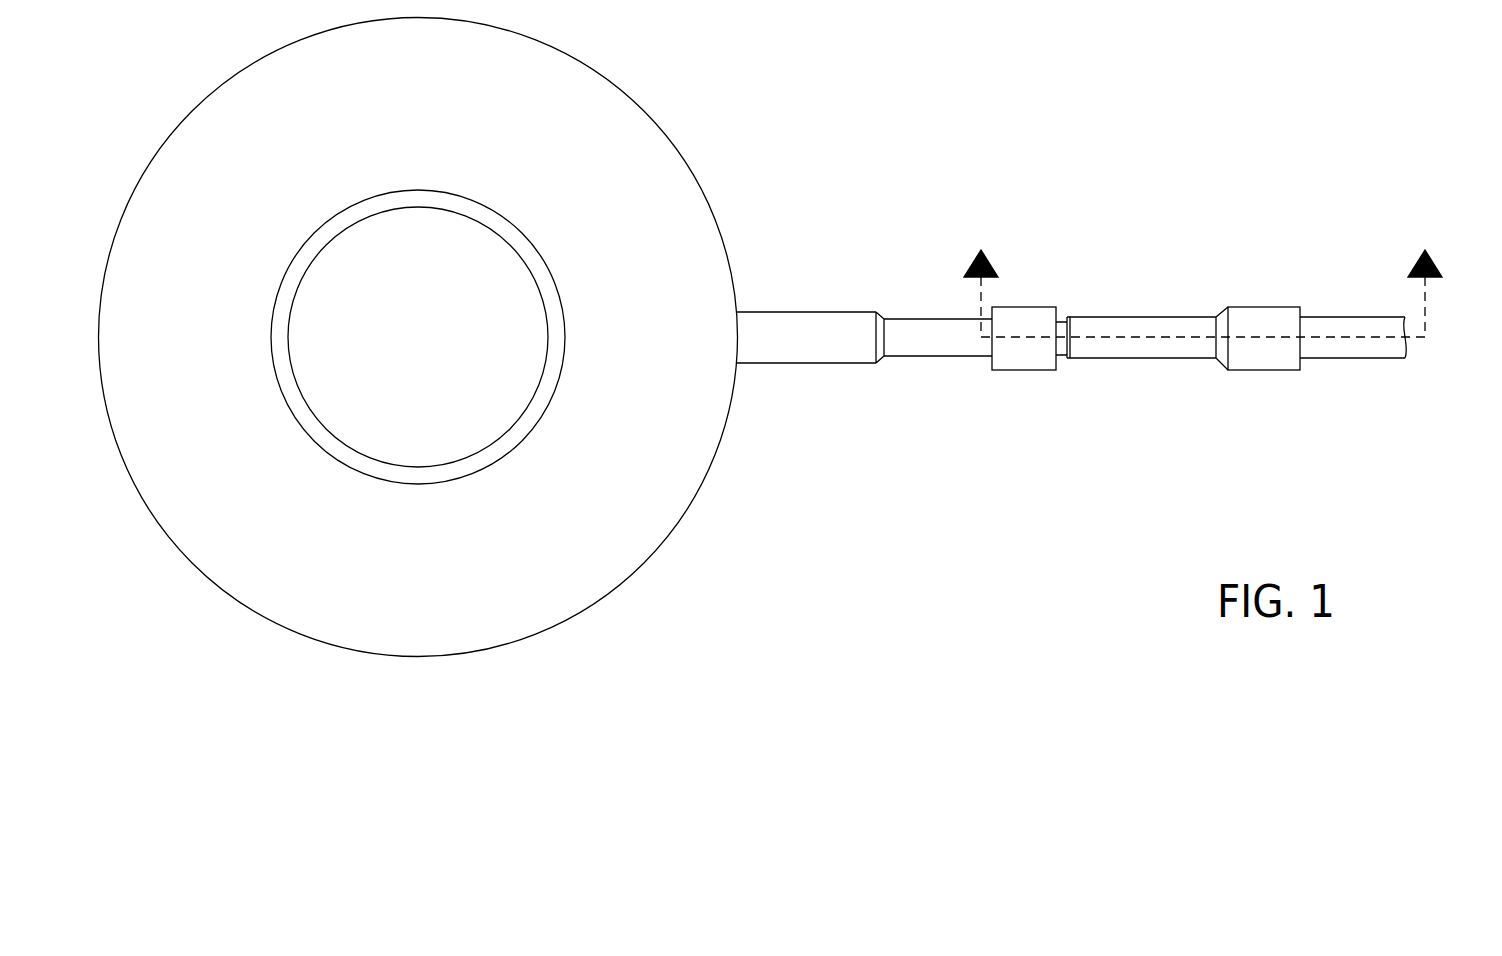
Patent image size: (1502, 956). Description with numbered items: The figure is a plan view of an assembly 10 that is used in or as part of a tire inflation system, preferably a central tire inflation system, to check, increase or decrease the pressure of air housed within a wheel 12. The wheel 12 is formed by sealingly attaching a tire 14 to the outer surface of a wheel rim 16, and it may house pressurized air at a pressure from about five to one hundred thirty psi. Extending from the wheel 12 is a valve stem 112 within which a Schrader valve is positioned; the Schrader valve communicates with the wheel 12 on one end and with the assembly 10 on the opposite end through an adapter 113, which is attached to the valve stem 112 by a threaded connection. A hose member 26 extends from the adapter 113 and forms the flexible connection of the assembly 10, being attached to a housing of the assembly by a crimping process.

The assembly 10 is at (1160, 94).
The wheel 12 is at (692, 556).
The tire 14 is at (420, 657).
The wheel rim 16 is at (427, 468).
The valve stem 112 is at (938, 360).
The adapter 113 is at (1023, 370).
The hose member 26 is at (1352, 358).